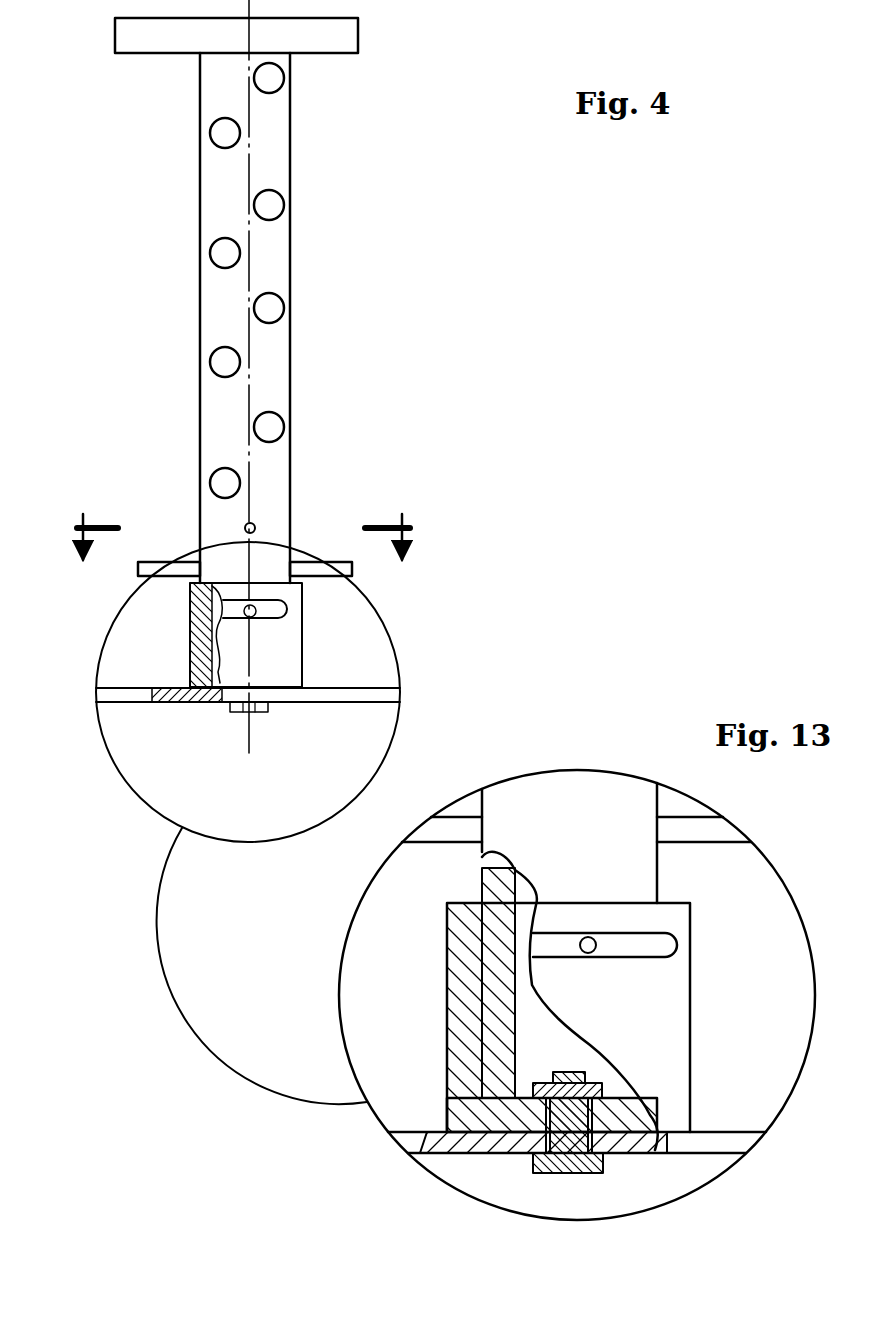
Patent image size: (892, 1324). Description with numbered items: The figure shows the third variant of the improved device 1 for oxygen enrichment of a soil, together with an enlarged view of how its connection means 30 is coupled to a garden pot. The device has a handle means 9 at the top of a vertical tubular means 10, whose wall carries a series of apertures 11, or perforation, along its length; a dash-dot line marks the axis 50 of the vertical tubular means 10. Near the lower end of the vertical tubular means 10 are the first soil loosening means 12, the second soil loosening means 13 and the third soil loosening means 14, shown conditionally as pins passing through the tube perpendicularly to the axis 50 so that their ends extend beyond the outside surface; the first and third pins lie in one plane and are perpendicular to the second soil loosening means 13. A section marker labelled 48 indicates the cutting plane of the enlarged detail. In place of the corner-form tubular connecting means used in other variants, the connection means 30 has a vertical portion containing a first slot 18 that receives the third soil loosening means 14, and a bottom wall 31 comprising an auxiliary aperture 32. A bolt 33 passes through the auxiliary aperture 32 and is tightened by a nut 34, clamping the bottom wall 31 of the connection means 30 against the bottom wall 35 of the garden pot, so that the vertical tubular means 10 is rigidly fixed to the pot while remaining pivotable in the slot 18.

In FIG. 4, the improved device 1 is at (462, 235).
In FIG. 4, the handle means 9 is at (350, 38).
In FIG. 4, the vertical tubular means 10 is at (280, 130).
In FIG. 13, the vertical tubular means 10 is at (642, 852).
In FIG. 4, the apertures (perforation) 11 is at (222, 360).
In FIG. 4, the first soil loosening means 12 is at (246, 528).
In FIG. 4, the second soil loosening means 13 is at (340, 568).
In FIG. 13, the second soil loosening means 13 is at (435, 828).
In FIG. 13, the third soil loosening means 14 is at (587, 954).
In FIG. 13, the first slot 18 is at (558, 943).
In FIG. 4, the connection means 30 is at (285, 672).
In FIG. 13, the connection means 30 is at (668, 1003).
In FIG. 13, the bottom wall 31 is at (635, 1123).
In FIG. 13, the auxiliary aperture 32 is at (593, 1117).
In FIG. 13, the bolt 33 is at (585, 1163).
In FIG. 13, the nut 34 is at (597, 1090).
In FIG. 4, the bottom wall of the garden pot 35 is at (330, 692).
In FIG. 13, the bottom wall of the garden pot 35 is at (485, 1142).
In FIG. 4, the section line 48 is at (242, 542).
In FIG. 4, the axis 50 is at (252, 348).